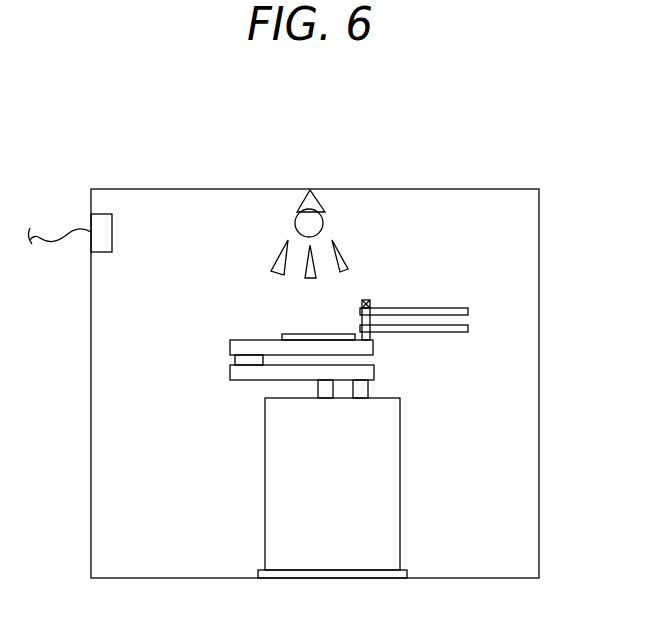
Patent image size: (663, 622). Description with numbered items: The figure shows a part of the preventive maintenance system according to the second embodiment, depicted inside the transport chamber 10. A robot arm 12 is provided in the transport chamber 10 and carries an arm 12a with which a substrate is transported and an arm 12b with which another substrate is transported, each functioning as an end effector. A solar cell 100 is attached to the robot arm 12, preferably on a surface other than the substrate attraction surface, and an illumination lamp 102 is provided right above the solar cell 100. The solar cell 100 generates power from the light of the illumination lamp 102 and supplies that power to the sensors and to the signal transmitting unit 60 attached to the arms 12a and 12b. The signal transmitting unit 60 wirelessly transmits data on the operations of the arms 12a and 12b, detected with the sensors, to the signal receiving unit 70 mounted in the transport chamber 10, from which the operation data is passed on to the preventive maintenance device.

The transport chamber 10 is at (450, 189).
The signal receiving unit 70 is at (99, 214).
The illumination lamp 102 is at (321, 223).
The solar cell 100 is at (292, 333).
The robot arm 12 is at (373, 348).
The signal transmitting unit 60 is at (370, 302).
The arm 12a is at (468, 312).
The arm 12b is at (468, 328).